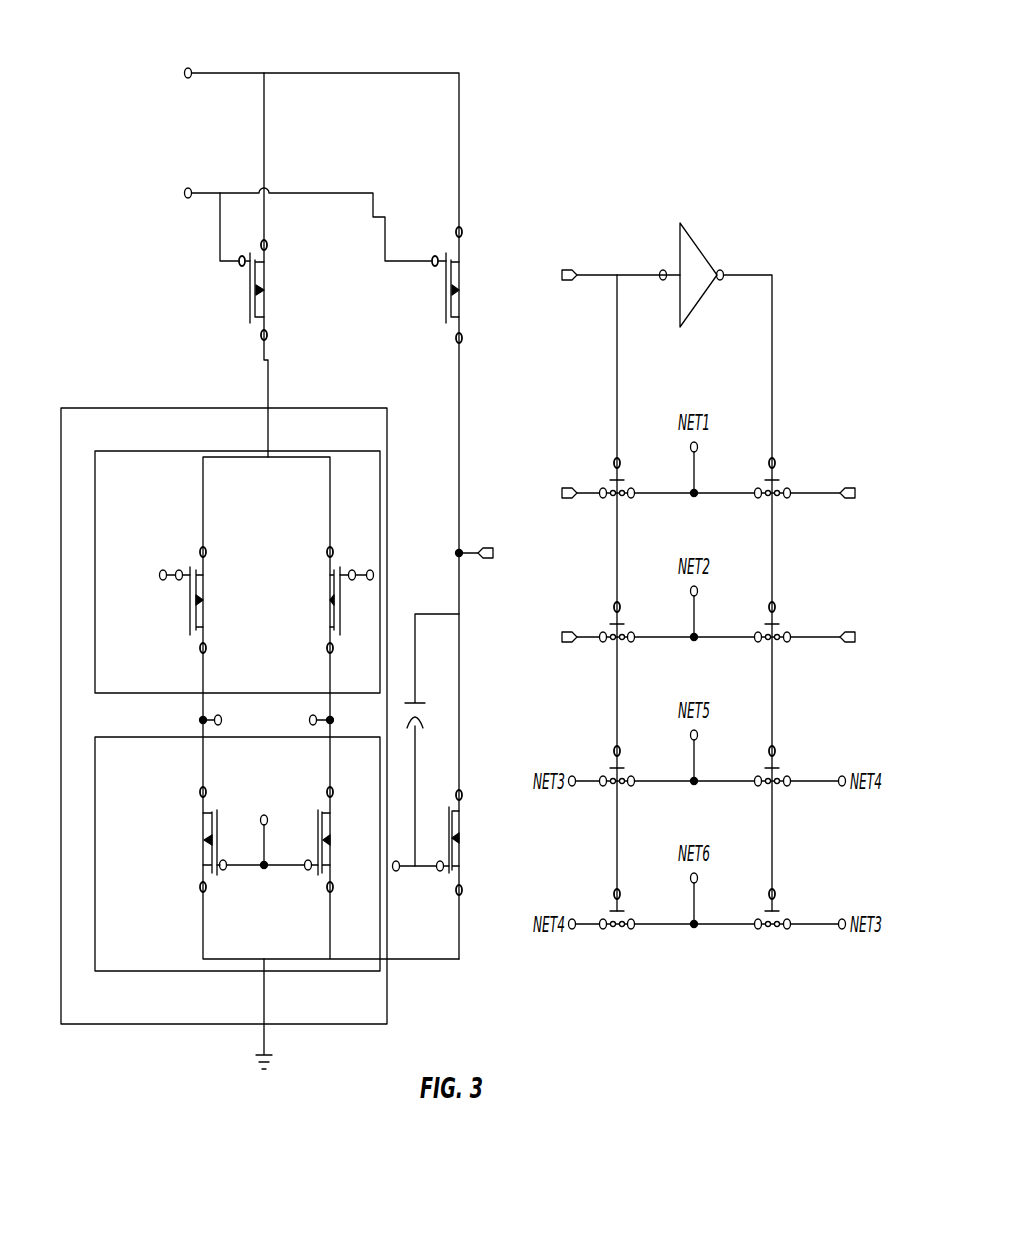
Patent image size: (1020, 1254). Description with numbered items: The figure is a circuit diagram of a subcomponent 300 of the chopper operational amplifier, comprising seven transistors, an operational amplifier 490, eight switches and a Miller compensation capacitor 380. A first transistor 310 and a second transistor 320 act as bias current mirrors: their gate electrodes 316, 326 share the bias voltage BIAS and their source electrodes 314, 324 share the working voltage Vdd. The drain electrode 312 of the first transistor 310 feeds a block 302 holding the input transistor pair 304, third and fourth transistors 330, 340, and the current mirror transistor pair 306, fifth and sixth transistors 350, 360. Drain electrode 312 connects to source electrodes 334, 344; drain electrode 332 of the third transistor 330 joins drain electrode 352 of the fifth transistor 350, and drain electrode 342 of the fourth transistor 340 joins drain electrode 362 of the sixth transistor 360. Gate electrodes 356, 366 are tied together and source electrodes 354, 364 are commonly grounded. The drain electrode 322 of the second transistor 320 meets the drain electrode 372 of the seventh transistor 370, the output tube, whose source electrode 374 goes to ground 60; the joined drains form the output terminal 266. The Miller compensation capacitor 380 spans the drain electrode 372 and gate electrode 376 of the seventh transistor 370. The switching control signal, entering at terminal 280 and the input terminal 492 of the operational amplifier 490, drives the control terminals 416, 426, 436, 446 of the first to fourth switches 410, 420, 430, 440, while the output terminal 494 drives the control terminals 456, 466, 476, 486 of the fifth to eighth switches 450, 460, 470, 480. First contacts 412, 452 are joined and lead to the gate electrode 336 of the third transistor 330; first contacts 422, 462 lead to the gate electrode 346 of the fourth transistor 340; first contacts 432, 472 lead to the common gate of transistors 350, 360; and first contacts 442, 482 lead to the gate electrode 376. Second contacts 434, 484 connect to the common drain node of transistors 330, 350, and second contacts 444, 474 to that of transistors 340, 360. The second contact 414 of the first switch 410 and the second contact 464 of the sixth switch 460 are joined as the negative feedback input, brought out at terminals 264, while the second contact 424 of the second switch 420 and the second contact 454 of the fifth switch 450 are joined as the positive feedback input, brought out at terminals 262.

The subcomponent 300 is at (518, 27).
The ground 60 is at (257, 1042).
The terminal 262 is at (556, 636).
The terminal 264 is at (556, 493).
The output terminal 266 is at (481, 546).
The input terminal 280 is at (566, 281).
The transistor block 302 is at (135, 1026).
The input transistor pair 304 is at (160, 696).
The current mirror transistor pair 306 is at (160, 974).
The first transistor 310 is at (248, 303).
The drain electrode of first transistor 312 is at (268, 337).
The source electrode of first transistor 314 is at (268, 247).
The gate electrode of first transistor 316 is at (241, 267).
The second transistor 320 is at (447, 300).
The drain electrode of second transistor 322 is at (463, 341).
The source electrode of second transistor 324 is at (463, 236).
The gate electrode of second transistor 326 is at (435, 267).
The third transistor 330 is at (174, 594).
The drain electrode of third transistor 332 is at (200, 650).
The source electrode of third transistor 334 is at (207, 552).
The gate electrode of third transistor 336 is at (178, 568).
The fourth transistor 340 is at (338, 594).
The drain electrode of fourth transistor 342 is at (294, 663).
The source electrode of fourth transistor 344 is at (326, 552).
The gate electrode of fourth transistor 346 is at (353, 568).
The fifth transistor 350 is at (180, 835).
The drain electrode of fifth transistor 352 is at (200, 792).
The source electrode of fifth transistor 354 is at (200, 890).
The gate electrode of fifth transistor 356 is at (224, 860).
The sixth transistor 360 is at (315, 835).
The drain electrode of sixth transistor 362 is at (333, 792).
The source electrode of sixth transistor 364 is at (294, 902).
The gate electrode of sixth transistor 366 is at (308, 860).
The seventh transistor 370 is at (473, 840).
The drain electrode of seventh transistor 372 is at (462, 790).
The source electrode of seventh transistor 374 is at (463, 893).
The gate electrode of seventh transistor 376 is at (440, 872).
The Miller compensation capacitor 380 is at (434, 687).
The first switch 410 is at (605, 467).
The first contact of first switch 412 is at (631, 498).
The switch terminal 414 is at (603, 486).
The control terminal of first switch 416 is at (638, 435).
The second switch 420 is at (605, 611).
The first contact of second switch 422 is at (631, 642).
The second contact of second switch 424 is at (603, 630).
The control terminal of second switch 426 is at (638, 579).
The third switch 430 is at (605, 755).
The first contact of third switch 432 is at (631, 786).
The second contact of third switch 434 is at (603, 774).
The control terminal of third switch 436 is at (638, 723).
The fourth switch 440 is at (605, 898).
The first contact of fourth switch 442 is at (631, 929).
The second contact of fourth switch 444 is at (603, 917).
The control terminal of fourth switch 446 is at (638, 866).
The fifth switch 450 is at (762, 454).
The first contact of fifth switch 452 is at (758, 486).
The second contact of fifth switch 454 is at (787, 498).
The control terminal of fifth switch 456 is at (794, 435).
The sixth switch 460 is at (762, 598).
The first contact of sixth switch 462 is at (758, 630).
The second contact of sixth switch 464 is at (787, 642).
The control terminal of sixth switch 466 is at (794, 579).
The seventh switch 470 is at (762, 742).
The first contact of seventh switch 472 is at (758, 774).
The second contact of seventh switch 474 is at (787, 786).
The control terminal of seventh switch 476 is at (794, 723).
The eighth switch 480 is at (762, 885).
The first contact of eighth switch 482 is at (758, 917).
The second contact of eighth switch 484 is at (787, 929).
The control terminal of eighth switch 486 is at (794, 866).
The operational amplifier 490 is at (691, 265).
The input terminal of operational amplifier 492 is at (661, 269).
The output terminal of operational amplifier 494 is at (721, 269).